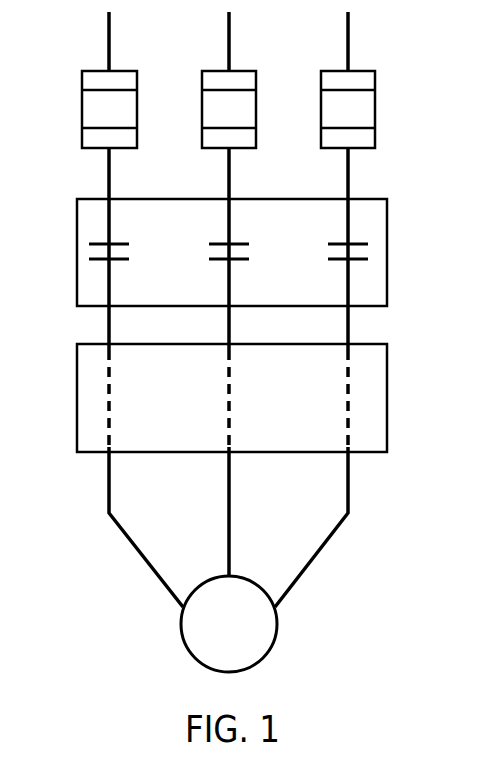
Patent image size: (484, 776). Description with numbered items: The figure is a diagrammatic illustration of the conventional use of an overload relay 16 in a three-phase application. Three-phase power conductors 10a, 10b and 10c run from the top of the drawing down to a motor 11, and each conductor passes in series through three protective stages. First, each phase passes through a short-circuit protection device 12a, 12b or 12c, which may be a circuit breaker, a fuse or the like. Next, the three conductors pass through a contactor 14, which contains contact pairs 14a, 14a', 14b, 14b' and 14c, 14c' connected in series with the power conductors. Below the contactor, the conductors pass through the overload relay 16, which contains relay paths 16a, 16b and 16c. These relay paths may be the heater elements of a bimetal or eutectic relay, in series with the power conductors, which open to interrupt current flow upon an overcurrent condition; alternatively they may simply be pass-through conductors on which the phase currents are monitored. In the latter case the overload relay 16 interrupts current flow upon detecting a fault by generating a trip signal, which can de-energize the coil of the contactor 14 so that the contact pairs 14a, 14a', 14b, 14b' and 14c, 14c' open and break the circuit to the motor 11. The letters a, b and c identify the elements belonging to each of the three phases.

The three-phase power conductor 10a is at (108, 33).
The three-phase power conductor 10b is at (228, 35).
The three-phase power conductor 10c is at (347, 34).
The motor 11 is at (182, 620).
The short-circuit protection device 12a is at (82, 97).
The short-circuit protection device 12b is at (202, 101).
The short-circuit protection device 12c is at (321, 104).
The contactor 14 is at (98, 199).
The contact pair 14a is at (80, 232).
The contact pair 14a' is at (127, 277).
The contact pair 14b is at (212, 227).
The contact pair 14b' is at (250, 277).
The contact pair 14c is at (332, 227).
The contact pair 14c' is at (379, 276).
The overload relay 16 is at (77, 363).
The relay path 16a is at (108, 395).
The relay path 16b is at (228, 395).
The relay path 16c is at (347, 395).